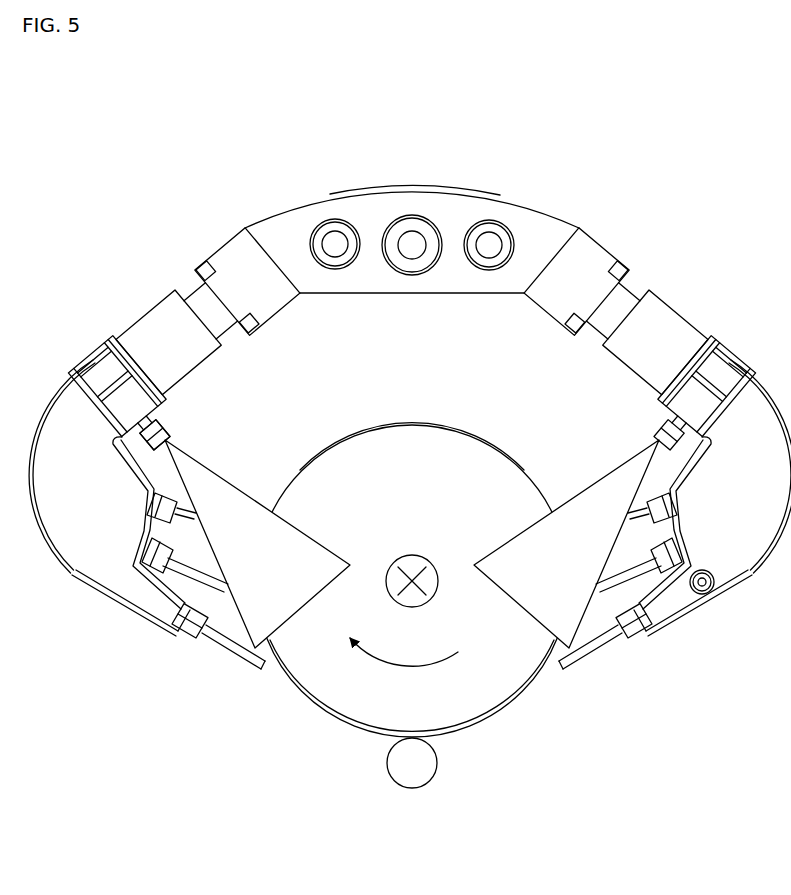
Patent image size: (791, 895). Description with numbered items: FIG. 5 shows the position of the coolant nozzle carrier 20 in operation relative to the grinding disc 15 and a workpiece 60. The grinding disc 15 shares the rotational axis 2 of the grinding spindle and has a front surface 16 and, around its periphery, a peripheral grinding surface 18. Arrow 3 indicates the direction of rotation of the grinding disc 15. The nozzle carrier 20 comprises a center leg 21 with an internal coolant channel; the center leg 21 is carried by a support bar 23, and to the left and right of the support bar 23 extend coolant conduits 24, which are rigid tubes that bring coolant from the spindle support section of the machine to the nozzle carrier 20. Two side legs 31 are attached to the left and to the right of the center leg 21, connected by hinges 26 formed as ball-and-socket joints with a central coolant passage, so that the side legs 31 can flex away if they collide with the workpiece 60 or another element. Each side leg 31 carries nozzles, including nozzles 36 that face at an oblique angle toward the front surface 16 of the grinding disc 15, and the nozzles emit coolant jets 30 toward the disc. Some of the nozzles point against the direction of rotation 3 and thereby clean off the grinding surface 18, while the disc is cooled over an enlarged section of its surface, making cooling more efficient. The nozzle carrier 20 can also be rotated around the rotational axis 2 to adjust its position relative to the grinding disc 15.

The rotational axis 2 is at (413, 569).
The direction of rotation 3 is at (410, 664).
The grinding disc 15 is at (412, 424).
The front surface 16 is at (444, 467).
The peripheral grinding surface 18 is at (312, 706).
The coolant nozzle carrier 20 is at (586, 158).
The center leg 21 is at (453, 194).
The support bar 23 is at (410, 216).
The coolant conduits 24 is at (336, 219).
The hinges 26 is at (181, 270).
The coolant jets 30 is at (252, 589).
The side legs 31 is at (72, 510).
The nozzles 36 is at (168, 429).
The workpiece 60 is at (412, 789).